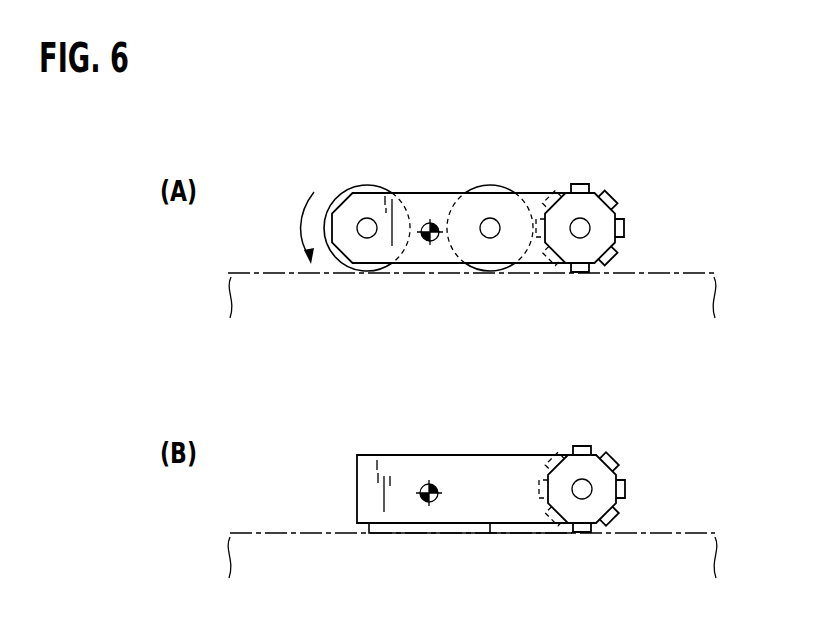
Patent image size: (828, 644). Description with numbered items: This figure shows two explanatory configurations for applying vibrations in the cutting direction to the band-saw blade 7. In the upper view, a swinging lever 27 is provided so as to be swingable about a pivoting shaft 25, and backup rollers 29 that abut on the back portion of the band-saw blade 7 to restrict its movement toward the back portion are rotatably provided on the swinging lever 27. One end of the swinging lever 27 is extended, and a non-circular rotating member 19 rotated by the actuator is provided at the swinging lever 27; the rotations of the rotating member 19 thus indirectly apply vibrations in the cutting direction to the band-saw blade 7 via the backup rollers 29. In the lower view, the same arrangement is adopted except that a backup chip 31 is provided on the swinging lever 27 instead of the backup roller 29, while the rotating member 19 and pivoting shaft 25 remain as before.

The band-saw blade 7 is at (661, 272).
The rotating member 19 is at (613, 200).
The pivoting shaft 25 is at (430, 242).
The swinging lever 27 is at (418, 200).
The backup rollers 29 is at (332, 252).
The backup chip 31 is at (388, 530).